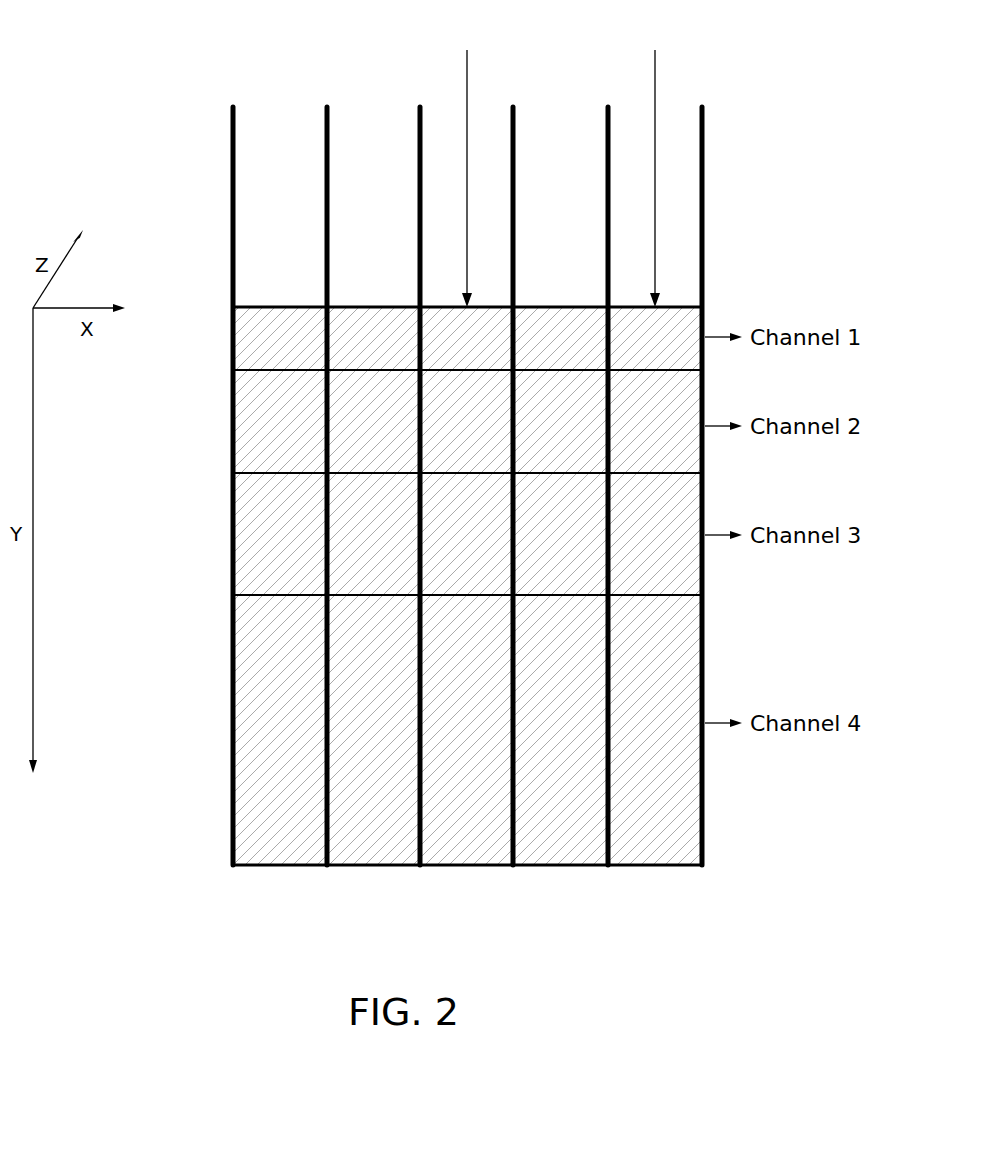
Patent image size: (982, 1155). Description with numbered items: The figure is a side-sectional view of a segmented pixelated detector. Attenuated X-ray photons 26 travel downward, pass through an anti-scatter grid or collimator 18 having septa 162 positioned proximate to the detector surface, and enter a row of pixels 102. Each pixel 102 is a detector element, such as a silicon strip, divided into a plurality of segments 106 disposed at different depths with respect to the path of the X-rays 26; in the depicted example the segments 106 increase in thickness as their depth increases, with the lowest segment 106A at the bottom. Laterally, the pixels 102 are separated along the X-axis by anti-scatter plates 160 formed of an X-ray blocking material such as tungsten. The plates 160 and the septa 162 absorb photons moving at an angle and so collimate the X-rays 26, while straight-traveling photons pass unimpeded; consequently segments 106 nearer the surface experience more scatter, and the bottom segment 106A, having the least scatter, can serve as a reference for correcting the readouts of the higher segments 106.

The anti-scatter grid 18 is at (230, 202).
The attenuated X-ray photons 26 is at (469, 73).
The pixel 102 is at (298, 884).
The segment 106 is at (212, 338).
The bottom segment 106A is at (206, 812).
The anti-scatter plate 160 is at (612, 795).
The septa 162 is at (706, 200).